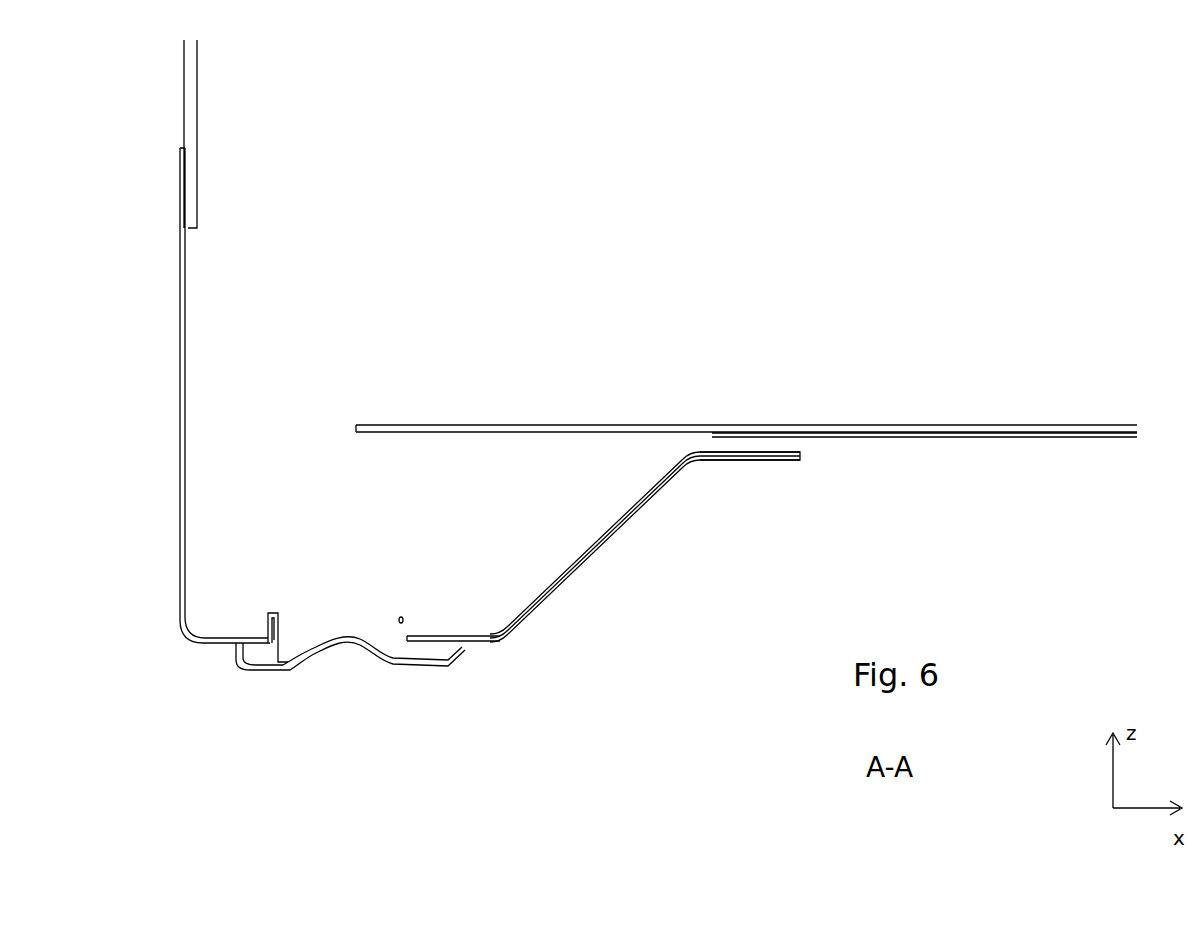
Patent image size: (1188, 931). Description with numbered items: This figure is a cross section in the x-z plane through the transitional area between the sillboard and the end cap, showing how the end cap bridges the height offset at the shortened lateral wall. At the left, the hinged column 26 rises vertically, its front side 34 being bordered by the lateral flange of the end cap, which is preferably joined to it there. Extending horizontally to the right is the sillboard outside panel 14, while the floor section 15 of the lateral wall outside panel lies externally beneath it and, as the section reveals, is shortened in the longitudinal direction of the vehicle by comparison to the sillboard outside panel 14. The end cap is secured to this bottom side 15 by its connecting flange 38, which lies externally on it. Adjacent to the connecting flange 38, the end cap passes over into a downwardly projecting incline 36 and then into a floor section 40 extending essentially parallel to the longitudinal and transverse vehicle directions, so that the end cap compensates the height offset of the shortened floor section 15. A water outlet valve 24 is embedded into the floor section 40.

The sillboard outside panel 14 is at (463, 432).
The floor section of the lateral wall outside panel 15 is at (885, 437).
The water outlet valve 24 is at (392, 672).
The hinged column 26 is at (192, 130).
The front side 34 is at (183, 378).
The incline 36 is at (582, 562).
The connecting flange 38 is at (746, 458).
The floor section 40 is at (440, 636).